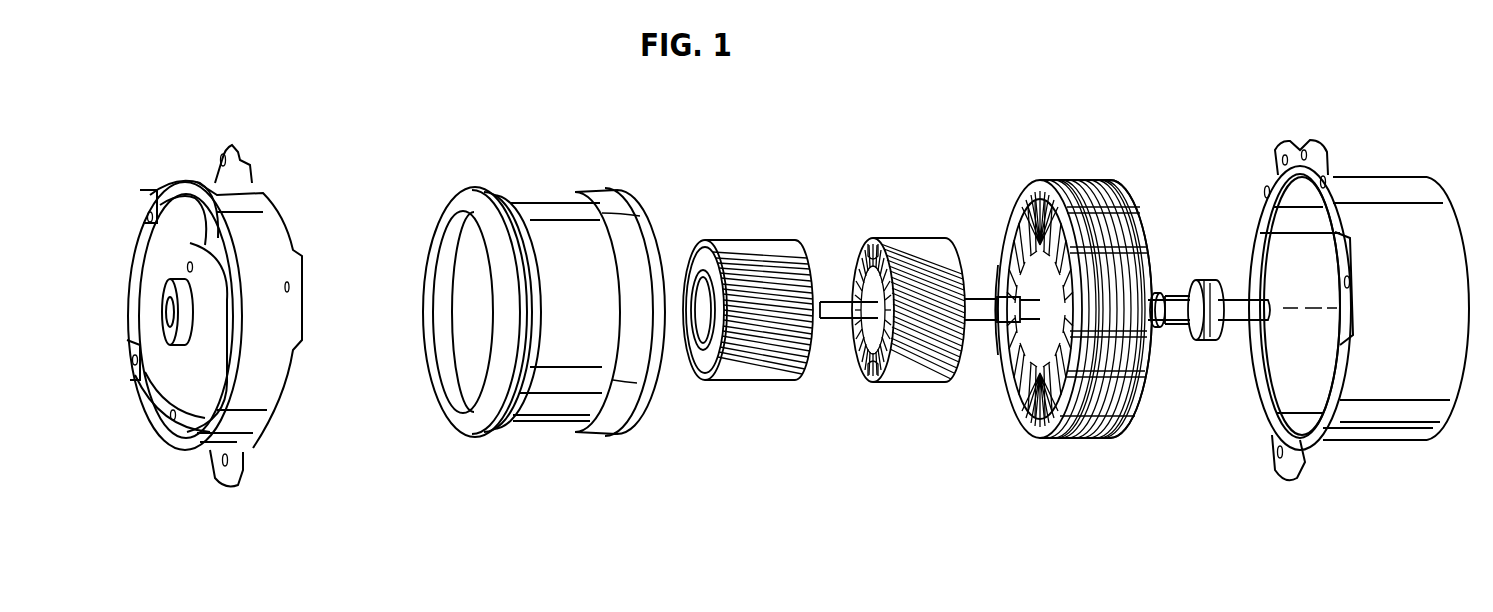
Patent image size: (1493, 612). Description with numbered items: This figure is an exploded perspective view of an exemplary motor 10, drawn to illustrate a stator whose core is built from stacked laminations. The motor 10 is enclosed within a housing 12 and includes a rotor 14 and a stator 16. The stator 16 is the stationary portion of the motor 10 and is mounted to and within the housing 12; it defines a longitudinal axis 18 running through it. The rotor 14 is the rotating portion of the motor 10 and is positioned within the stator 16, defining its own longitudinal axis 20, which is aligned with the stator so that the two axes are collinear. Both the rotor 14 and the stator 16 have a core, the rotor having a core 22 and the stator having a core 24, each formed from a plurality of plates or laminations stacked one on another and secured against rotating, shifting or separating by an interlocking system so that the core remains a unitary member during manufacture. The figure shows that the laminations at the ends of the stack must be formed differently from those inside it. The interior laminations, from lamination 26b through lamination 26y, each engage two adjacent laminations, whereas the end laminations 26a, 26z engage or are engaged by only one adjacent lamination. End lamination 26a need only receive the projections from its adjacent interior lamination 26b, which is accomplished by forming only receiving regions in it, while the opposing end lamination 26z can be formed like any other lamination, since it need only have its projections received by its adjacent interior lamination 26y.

The motor 10 is at (190, 119).
The housing 12 is at (218, 436).
The rotor 14 is at (862, 380).
The stator 16 is at (1059, 336).
The longitudinal axis 18 is at (1300, 308).
The longitudinal axis 20 is at (838, 295).
The core 22 is at (855, 290).
The core 24 is at (1023, 403).
The end lamination 26a is at (998, 265).
The interior lamination 26b is at (1060, 180).
The interior lamination 26y is at (1102, 181).
The end lamination 26z is at (1125, 192).